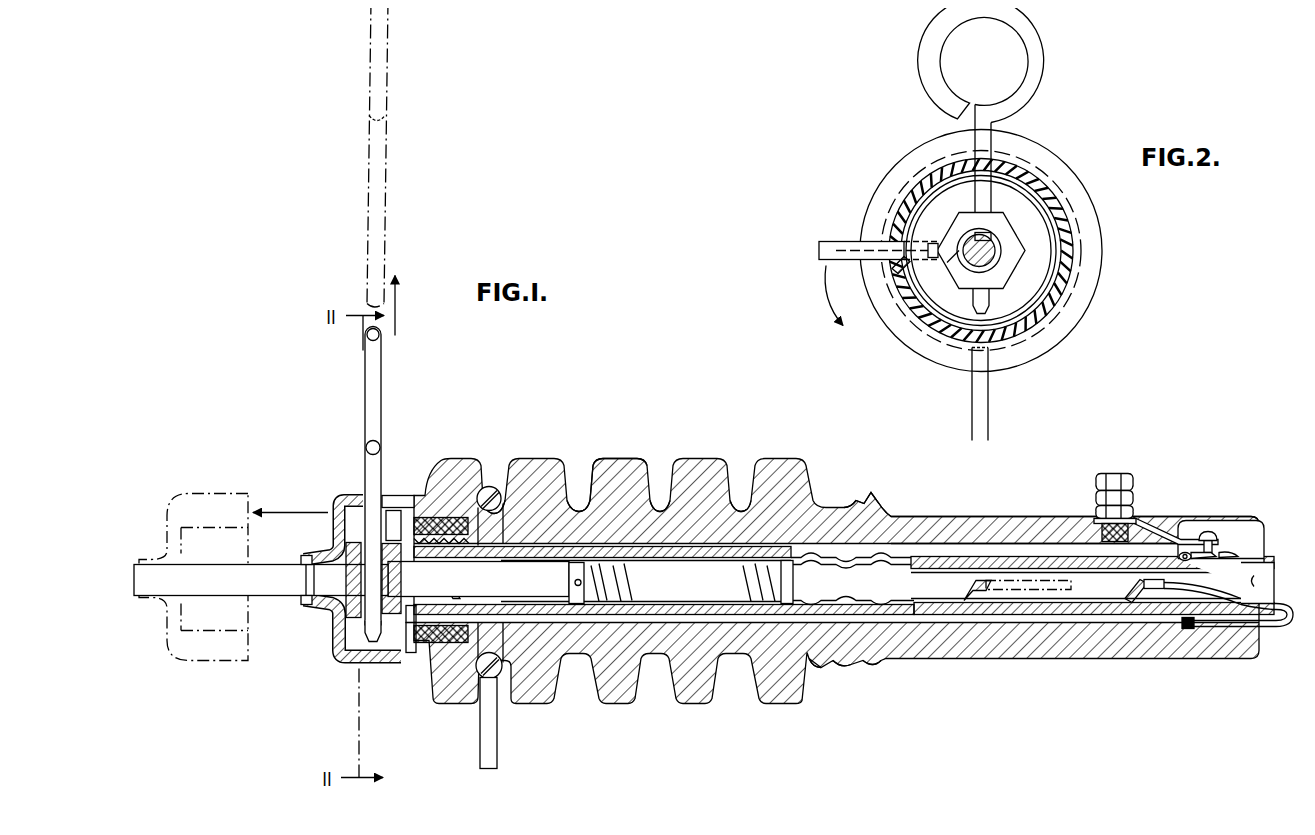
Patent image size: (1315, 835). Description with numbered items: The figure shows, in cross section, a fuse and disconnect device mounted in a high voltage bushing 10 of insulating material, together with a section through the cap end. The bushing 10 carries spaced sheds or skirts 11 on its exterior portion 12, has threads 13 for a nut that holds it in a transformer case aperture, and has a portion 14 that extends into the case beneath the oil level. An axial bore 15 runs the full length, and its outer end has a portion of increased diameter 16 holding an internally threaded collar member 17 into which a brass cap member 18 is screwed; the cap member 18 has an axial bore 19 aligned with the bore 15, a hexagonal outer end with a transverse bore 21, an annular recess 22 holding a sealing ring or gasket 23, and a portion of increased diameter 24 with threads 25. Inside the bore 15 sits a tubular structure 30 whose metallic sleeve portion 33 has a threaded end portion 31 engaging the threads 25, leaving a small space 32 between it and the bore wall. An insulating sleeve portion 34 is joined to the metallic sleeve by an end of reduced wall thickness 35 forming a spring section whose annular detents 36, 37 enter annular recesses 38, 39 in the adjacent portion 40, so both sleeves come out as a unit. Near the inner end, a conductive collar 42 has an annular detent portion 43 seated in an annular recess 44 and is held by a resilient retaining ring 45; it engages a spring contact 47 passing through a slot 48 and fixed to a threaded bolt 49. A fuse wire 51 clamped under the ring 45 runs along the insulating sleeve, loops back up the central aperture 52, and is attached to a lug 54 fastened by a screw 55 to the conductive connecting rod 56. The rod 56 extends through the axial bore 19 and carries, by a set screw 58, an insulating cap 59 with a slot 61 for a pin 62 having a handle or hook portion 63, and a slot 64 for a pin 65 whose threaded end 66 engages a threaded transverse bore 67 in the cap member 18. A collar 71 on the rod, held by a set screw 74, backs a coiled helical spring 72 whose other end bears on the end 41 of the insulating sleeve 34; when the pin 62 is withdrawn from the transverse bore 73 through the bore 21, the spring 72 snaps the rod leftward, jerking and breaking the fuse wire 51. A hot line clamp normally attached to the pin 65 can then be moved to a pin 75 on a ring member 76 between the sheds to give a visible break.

In FIG. 1, the bushing 10 is at (700, 462).
In FIG. 1, the sheds or skirts 11 is at (632, 462).
In FIG. 1, the exterior portion 12 is at (602, 516).
In FIG. 1, the threads 13 is at (867, 495).
In FIG. 1, the portion 14 is at (1062, 525).
In FIG. 1, the axial bore 15 is at (1013, 547).
In FIG. 1, the portion of increased diameter 16 is at (489, 486).
In FIG. 1, the collar member 17 is at (432, 498).
In FIG. 1, the cap member 18 is at (395, 495).
In FIG. 2, the cap member 18 is at (1008, 234).
In FIG. 1, the axial bore 19 is at (352, 548).
In FIG. 1, the transverse bore 21 is at (364, 628).
In FIG. 2, the transverse bore 21 is at (986, 214).
In FIG. 1, the annular recess 22 is at (410, 655).
In FIG. 1, the sealing ring or gasket 23 is at (383, 645).
In FIG. 1, the portion of increased diameter 24 is at (430, 670).
In FIG. 1, the threads 25 is at (452, 596).
In FIG. 1, the tubular structure 30 is at (735, 556).
In FIG. 1, the threaded end portion 31 is at (492, 576).
In FIG. 1, the space 32 is at (634, 543).
In FIG. 1, the metallic sleeve portion 33 is at (553, 543).
In FIG. 1, the insulating sleeve portion 34 is at (950, 568).
In FIG. 1, the end of reduced wall thickness 35 is at (837, 565).
In FIG. 1, the annular detent 36 is at (818, 664).
In FIG. 1, the annular detent 37 is at (872, 664).
In FIG. 1, the annular recess 38 is at (840, 666).
In FIG. 1, the annular recess 39 is at (888, 661).
In FIG. 1, the portion 40 is at (862, 565).
In FIG. 1, the end 41 is at (792, 583).
In FIG. 1, the conductive collar 42 is at (1215, 549).
In FIG. 1, the annular detent portion 43 is at (1212, 558).
In FIG. 1, the annular recess 44 is at (1188, 560).
In FIG. 1, the resilient retaining ring 45 is at (1190, 630).
In FIG. 1, the spring contact 47 is at (1170, 535).
In FIG. 1, the slot 48 is at (1236, 521).
In FIG. 1, the threaded bolt 49 is at (1118, 473).
In FIG. 1, the fuse wire 51 is at (1282, 628).
In FIG. 1, the central aperture 52 is at (1273, 583).
In FIG. 1, the lug 54 is at (1153, 590).
In FIG. 1, the screw 55 is at (1136, 602).
In FIG. 1, the conductive connecting rod 56 is at (1106, 594).
In FIG. 2, the conductive connecting rod 56 is at (974, 306).
In FIG. 1, the set screw 58 is at (308, 606).
In FIG. 1, the cap 59 is at (192, 492).
In FIG. 2, the cap 59 is at (1075, 235).
In FIG. 1, the slot 61 is at (352, 486).
In FIG. 2, the slot 61 is at (993, 178).
In FIG. 1, the pin 62 is at (381, 456).
In FIG. 2, the pin 62 is at (990, 146).
In FIG. 1, the handle or hook portion 63 is at (381, 370).
In FIG. 2, the handle or hook portion 63 is at (1043, 55).
In FIG. 2, the slot 64 is at (893, 270).
In FIG. 2, the pin 65 is at (835, 241).
In FIG. 2, the threaded end 66 is at (932, 243).
In FIG. 2, the threaded transverse bore 67 is at (948, 263).
In FIG. 1, the collar 71 is at (566, 592).
In FIG. 1, the coiled helical spring 72 is at (608, 594).
In FIG. 1, the transverse bore 73 is at (356, 583).
In FIG. 2, the transverse bore 73 is at (1000, 262).
In FIG. 1, the set screw 74 is at (573, 582).
In FIG. 1, the pin 75 is at (496, 758).
In FIG. 1, the ring member 76 is at (493, 677).